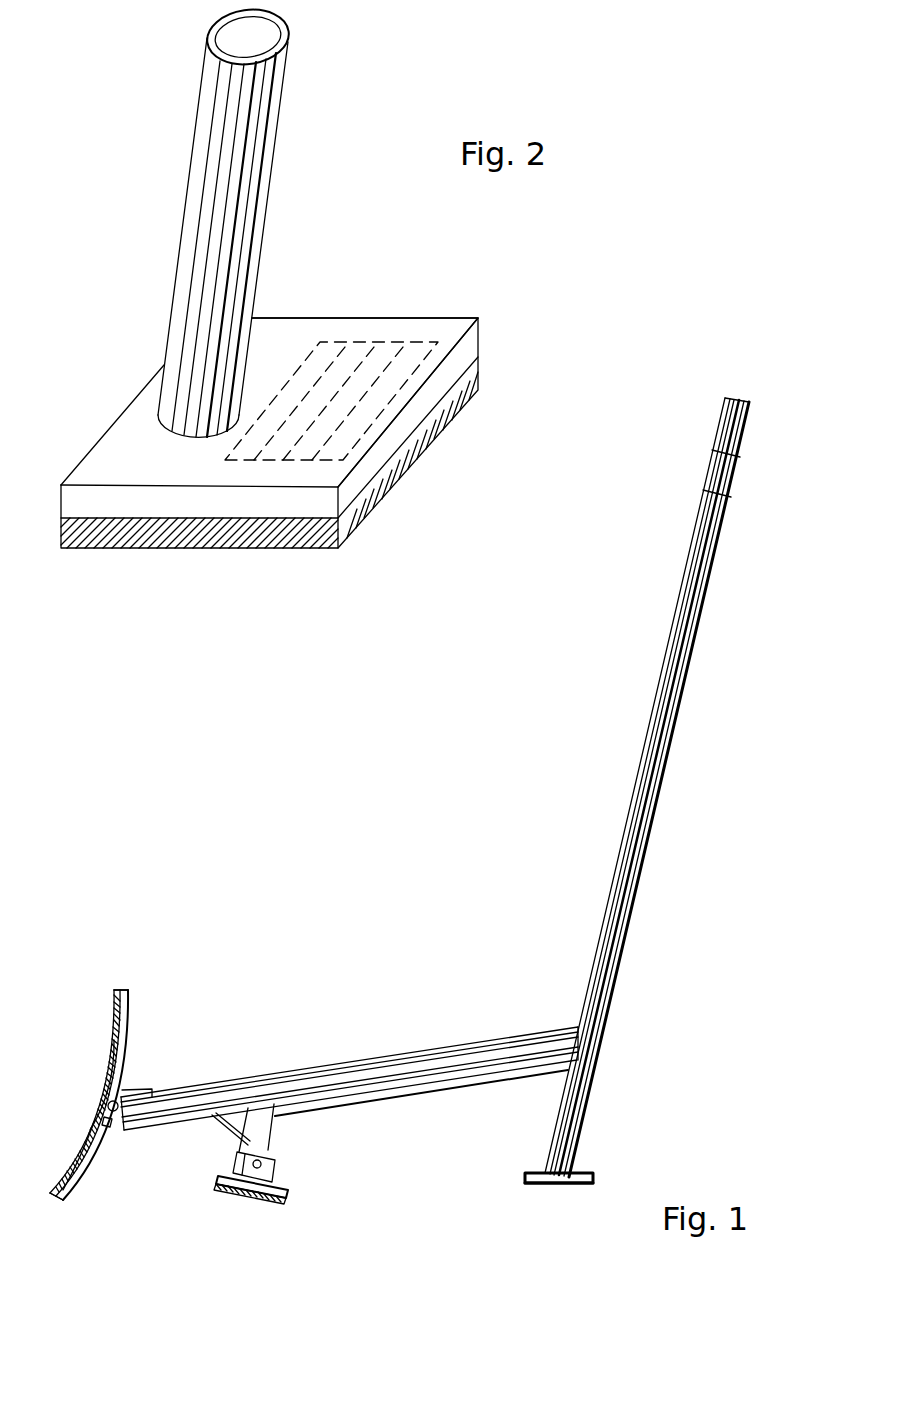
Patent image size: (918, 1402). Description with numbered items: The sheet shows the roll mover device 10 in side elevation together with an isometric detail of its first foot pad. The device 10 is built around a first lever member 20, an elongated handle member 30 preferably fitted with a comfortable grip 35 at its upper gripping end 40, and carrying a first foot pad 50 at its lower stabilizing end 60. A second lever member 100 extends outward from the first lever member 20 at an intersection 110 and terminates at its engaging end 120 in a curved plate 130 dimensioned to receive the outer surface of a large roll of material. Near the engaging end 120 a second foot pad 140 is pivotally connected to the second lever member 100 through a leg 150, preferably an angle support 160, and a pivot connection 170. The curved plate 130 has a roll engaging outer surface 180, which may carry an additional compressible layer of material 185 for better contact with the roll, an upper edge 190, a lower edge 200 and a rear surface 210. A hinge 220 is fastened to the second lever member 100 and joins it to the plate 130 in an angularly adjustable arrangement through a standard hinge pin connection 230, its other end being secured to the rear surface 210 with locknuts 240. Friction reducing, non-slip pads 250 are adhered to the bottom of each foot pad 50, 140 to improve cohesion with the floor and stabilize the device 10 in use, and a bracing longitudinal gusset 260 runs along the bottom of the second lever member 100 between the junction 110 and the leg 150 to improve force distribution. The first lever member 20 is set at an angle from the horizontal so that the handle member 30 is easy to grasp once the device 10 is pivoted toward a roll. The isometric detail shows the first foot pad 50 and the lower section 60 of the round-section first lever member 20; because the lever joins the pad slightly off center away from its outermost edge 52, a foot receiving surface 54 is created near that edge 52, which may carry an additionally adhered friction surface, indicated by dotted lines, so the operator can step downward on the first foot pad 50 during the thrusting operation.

In FIG. 1, the roll mover device 10 is at (370, 805).
In FIG. 1, the first lever member 20 is at (660, 543).
In FIG. 1, the handle member 30 is at (748, 470).
In FIG. 1, the grip 35 is at (727, 498).
In FIG. 1, the upper gripping end 40 is at (665, 424).
In FIG. 2, the first foot pad 50 is at (112, 448).
In FIG. 1, the first foot pad 50 is at (590, 1172).
In FIG. 2, the outermost edge 52 is at (450, 345).
In FIG. 2, the foot receiving surface 54 is at (373, 358).
In FIG. 2, the lower stabilizing end 60 is at (272, 118).
In FIG. 1, the lower stabilizing end 60 is at (618, 1093).
In FIG. 1, the second lever member 100 is at (280, 1005).
In FIG. 1, the intersection 110 is at (574, 1022).
In FIG. 1, the engaging end 120 is at (184, 1012).
In FIG. 1, the curved plate 130 is at (63, 1180).
In FIG. 1, the second foot pad 140 is at (292, 1192).
In FIG. 1, the leg 150 is at (275, 1128).
In FIG. 1, the angle support 160 is at (225, 1120).
In FIG. 1, the pivot connection 170 is at (278, 1168).
In FIG. 1, the roll engaging outer surface 180 is at (115, 1035).
In FIG. 1, the compressible layer of material 185 is at (106, 1080).
In FIG. 1, the upper edge 190 is at (128, 988).
In FIG. 1, the lower edge 200 is at (50, 1195).
In FIG. 1, the rear surface 210 is at (83, 1168).
In FIG. 1, the hinge 220 is at (150, 1092).
In FIG. 1, the hinge pin connection 230 is at (120, 1100).
In FIG. 1, the locknuts 240 is at (110, 1124).
In FIG. 2, the non-slip pads 250 is at (130, 540).
In FIG. 1, the longitudinal gusset 260 is at (438, 1090).